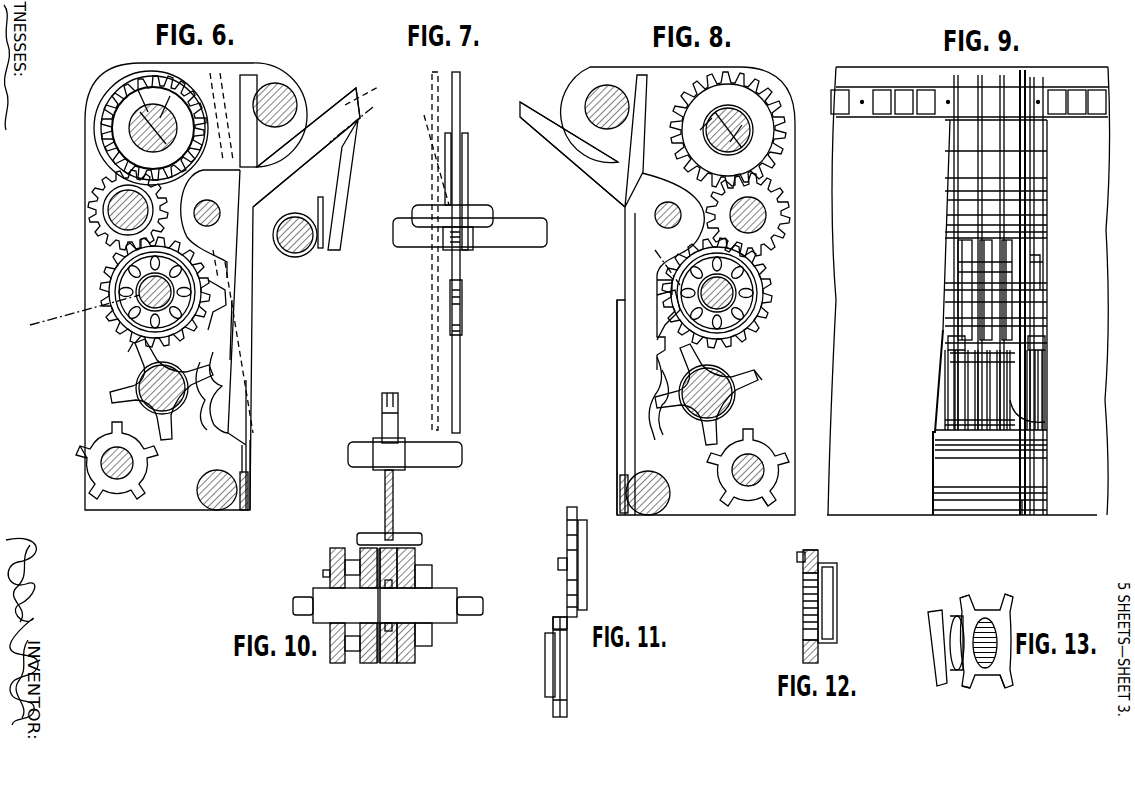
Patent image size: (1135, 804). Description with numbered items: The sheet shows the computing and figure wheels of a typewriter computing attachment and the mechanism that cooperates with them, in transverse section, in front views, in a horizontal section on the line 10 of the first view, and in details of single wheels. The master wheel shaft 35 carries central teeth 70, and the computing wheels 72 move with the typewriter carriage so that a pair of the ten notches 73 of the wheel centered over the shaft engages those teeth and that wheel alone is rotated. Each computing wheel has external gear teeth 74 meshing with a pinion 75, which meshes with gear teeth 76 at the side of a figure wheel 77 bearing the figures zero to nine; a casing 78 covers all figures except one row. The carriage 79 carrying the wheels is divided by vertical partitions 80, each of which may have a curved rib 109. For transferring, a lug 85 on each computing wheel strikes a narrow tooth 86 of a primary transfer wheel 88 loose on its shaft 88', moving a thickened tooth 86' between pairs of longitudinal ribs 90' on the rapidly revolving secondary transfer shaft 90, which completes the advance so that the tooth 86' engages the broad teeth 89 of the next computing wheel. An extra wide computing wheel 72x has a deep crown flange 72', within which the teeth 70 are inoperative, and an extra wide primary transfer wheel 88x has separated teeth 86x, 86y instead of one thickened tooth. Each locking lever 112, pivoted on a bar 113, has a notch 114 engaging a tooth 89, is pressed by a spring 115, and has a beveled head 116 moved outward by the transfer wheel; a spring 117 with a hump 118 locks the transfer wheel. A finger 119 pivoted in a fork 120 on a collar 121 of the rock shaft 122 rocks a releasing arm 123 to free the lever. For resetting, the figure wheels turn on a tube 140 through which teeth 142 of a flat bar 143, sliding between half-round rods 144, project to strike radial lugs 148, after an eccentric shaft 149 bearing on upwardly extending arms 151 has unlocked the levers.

In FIG. 6, the section line 10 is at (373, 107).
In FIG. 8, the section line 10 is at (672, 278).
In FIG. 10, the master wheel shaft 35 is at (473, 613).
In FIG. 8, the master wheel shaft 35 is at (740, 300).
In FIG. 6, the central teeth 70 is at (140, 294).
In FIG. 10, the central teeth 70 is at (395, 622).
In FIG. 6, the computing wheel 72 is at (143, 292).
In FIG. 10, the computing wheel 72 is at (358, 601).
In FIG. 8, the computing wheel 72 is at (739, 293).
In FIG. 9, the computing wheel 72 is at (1015, 283).
In FIG. 11, the computing wheel 72 is at (596, 565).
In FIG. 12, the computing wheel 72 is at (793, 569).
In FIG. 10, the crown flange 72' is at (378, 599).
In FIG. 9, the crown flange 72' is at (993, 269).
In FIG. 12, the crown flange 72' is at (843, 603).
In FIG. 9, the extra wide computing wheel 72x is at (1010, 250).
In FIG. 12, the extra wide computing wheel 72x is at (803, 650).
In FIG. 6, the recesses or notches 73 is at (138, 300).
In FIG. 8, the recesses or notches 73 is at (735, 290).
In FIG. 12, the recesses or notches 73 is at (803, 605).
In FIG. 6, the external gear teeth 74 is at (112, 277).
In FIG. 8, the external gear teeth 74 is at (655, 310).
In FIG. 9, the external gear teeth 74 is at (958, 258).
In FIG. 11, the external gear teeth 74 is at (567, 535).
In FIG. 6, the pinion 75 is at (95, 208).
In FIG. 8, the pinion 75 is at (790, 215).
In FIG. 9, the pinion 75 is at (947, 213).
In FIG. 6, the gear teeth 76 is at (118, 92).
In FIG. 8, the gear teeth 76 is at (785, 110).
In FIG. 9, the gear teeth 76 is at (890, 90).
In FIG. 6, the figure wheel 77 is at (163, 120).
In FIG. 8, the figure wheel 77 is at (760, 105).
In FIG. 9, the figure wheel 77 is at (925, 87).
In FIG. 9, the casing 78 is at (969, 291).
In FIG. 9, the carriage 79 is at (880, 515).
In FIG. 6, the vertical partitions 80 is at (85, 262).
In FIG. 8, the vertical partitions 80 is at (657, 291).
In FIG. 9, the vertical partitions 80 is at (1022, 513).
In FIG. 10, the lug or tooth 85 is at (323, 573).
In FIG. 8, the lug or tooth 85 is at (760, 340).
In FIG. 9, the lug or tooth 85 is at (948, 340).
In FIG. 11, the lug or tooth 85 is at (558, 564).
In FIG. 12, the lug or tooth 85 is at (797, 557).
In FIG. 6, the narrow tooth 86 is at (116, 388).
In FIG. 8, the narrow tooth 86 is at (728, 393).
In FIG. 9, the narrow tooth 86 is at (959, 390).
In FIG. 11, the narrow tooth 86 is at (558, 660).
In FIG. 13, the narrow tooth 86 is at (973, 643).
In FIG. 6, the thickened tooth 86' is at (113, 352).
In FIG. 8, the thickened tooth 86' is at (785, 401).
In FIG. 9, the thickened tooth 86' is at (949, 418).
In FIG. 11, the thickened tooth 86' is at (543, 620).
In FIG. 13, the separate tooth 86x is at (962, 605).
In FIG. 13, the separate tooth 86y is at (930, 620).
In FIG. 6, the primary transfer wheel 88 is at (161, 389).
In FIG. 8, the primary transfer wheel 88 is at (706, 403).
In FIG. 9, the primary transfer wheel 88 is at (1051, 390).
In FIG. 11, the primary transfer wheel 88 is at (532, 665).
In FIG. 6, the shaft 88' is at (134, 389).
In FIG. 8, the shaft 88' is at (699, 380).
In FIG. 9, the extra wide primary transfer wheel 88x is at (1030, 422).
In FIG. 13, the extra wide primary transfer wheel 88x is at (992, 640).
In FIG. 6, the broad teeth 89 is at (120, 322).
In FIG. 10, the broad teeth 89 is at (410, 553).
In FIG. 9, the broad teeth 89 is at (957, 298).
In FIG. 12, the broad teeth 89 is at (818, 552).
In FIG. 6, the secondary transfer shaft 90 is at (128, 460).
In FIG. 8, the secondary transfer shaft 90 is at (760, 467).
In FIG. 9, the secondary transfer shaft 90 is at (970, 422).
In FIG. 6, the longitudinal ribs 90' is at (85, 454).
In FIG. 8, the longitudinal ribs 90' is at (734, 481).
In FIG. 9, the longitudinal ribs 90' is at (972, 442).
In FIG. 9, the curved rib 109 is at (1028, 78).
In FIG. 6, the locking lever 112 is at (232, 335).
In FIG. 7, the locking lever 112 is at (432, 362).
In FIG. 6, the bar 113 is at (222, 200).
In FIG. 7, the bar 113 is at (470, 212).
In FIG. 10, the bar 113 is at (372, 533).
In FIG. 8, the bar 113 is at (660, 207).
In FIG. 6, the recess or notch 114 is at (210, 297).
In FIG. 7, the recess or notch 114 is at (462, 300).
In FIG. 8, the recess or notch 114 is at (657, 300).
In FIG. 6, the spring 115 is at (250, 436).
In FIG. 8, the spring 115 is at (620, 430).
In FIG. 6, the beveled head 116 is at (210, 432).
In FIG. 8, the beveled head 116 is at (655, 425).
In FIG. 6, the spring 117 is at (250, 460).
In FIG. 8, the spring 117 is at (615, 452).
In FIG. 6, the hump 118 is at (225, 360).
In FIG. 8, the hump 118 is at (657, 365).
In FIG. 6, the finger 119 is at (345, 188).
In FIG. 7, the finger 119 is at (468, 170).
In FIG. 6, the fork 120 is at (323, 248).
In FIG. 7, the fork 120 is at (382, 433).
In FIG. 6, the collar 121 is at (292, 218).
In FIG. 7, the collar 121 is at (445, 245).
In FIG. 6, the rock shaft 122 is at (297, 253).
In FIG. 7, the rock shaft 122 is at (447, 342).
In FIG. 6, the releasing arm 123 is at (352, 100).
In FIG. 8, the releasing arm 123 is at (540, 100).
In FIG. 6, the tube 140 is at (140, 118).
In FIG. 8, the tube 140 is at (728, 118).
In FIG. 6, the teeth 142 is at (170, 95).
In FIG. 6, the flat bar 143 is at (135, 132).
In FIG. 8, the flat bar 143 is at (725, 140).
In FIG. 8, the half-round rods 144 is at (710, 122).
In FIG. 6, the radial lug 148 is at (145, 88).
In FIG. 6, the eccentric shaft 149 is at (290, 95).
In FIG. 8, the eccentric shaft 149 is at (600, 90).
In FIG. 6, the upwardly extending arm 151 is at (248, 80).
In FIG. 8, the upwardly extending arm 151 is at (640, 78).